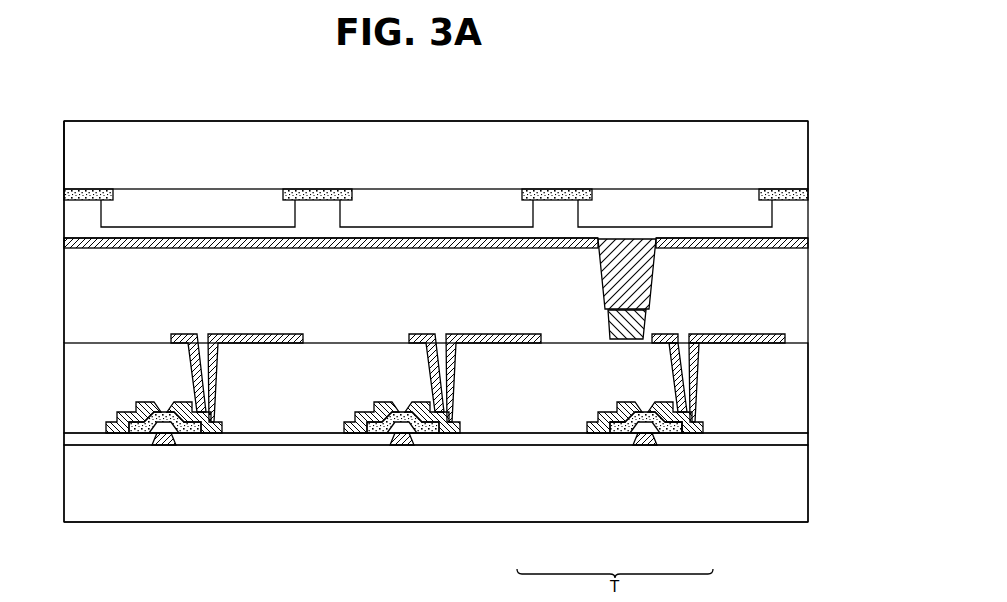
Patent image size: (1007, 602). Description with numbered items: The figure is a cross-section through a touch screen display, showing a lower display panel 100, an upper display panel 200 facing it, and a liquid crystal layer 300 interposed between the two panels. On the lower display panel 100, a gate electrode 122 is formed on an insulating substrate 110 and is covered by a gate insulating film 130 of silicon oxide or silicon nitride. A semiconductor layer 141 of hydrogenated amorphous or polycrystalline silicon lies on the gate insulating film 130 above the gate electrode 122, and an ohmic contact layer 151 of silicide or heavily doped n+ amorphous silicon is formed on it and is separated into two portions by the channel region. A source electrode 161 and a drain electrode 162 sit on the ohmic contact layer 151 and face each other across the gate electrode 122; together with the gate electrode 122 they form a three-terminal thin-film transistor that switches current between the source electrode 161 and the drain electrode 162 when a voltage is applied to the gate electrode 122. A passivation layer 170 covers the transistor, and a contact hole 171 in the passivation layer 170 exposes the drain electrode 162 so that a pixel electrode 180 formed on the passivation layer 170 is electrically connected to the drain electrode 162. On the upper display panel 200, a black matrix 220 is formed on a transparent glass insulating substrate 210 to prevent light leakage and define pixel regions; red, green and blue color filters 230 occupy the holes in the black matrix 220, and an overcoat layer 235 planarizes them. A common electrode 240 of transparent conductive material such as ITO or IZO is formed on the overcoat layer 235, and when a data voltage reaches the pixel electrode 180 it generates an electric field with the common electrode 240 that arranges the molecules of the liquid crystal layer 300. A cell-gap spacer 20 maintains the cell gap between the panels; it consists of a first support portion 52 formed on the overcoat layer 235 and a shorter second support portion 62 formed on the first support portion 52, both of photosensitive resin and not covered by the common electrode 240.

The upper display panel 200 is at (108, 108).
The liquid crystal layer 300 is at (74, 294).
The lower display panel 100 is at (129, 540).
The insulating substrate 210 is at (797, 144).
The black matrix 220 is at (800, 192).
The R, G and B color filters 230 is at (771, 208).
The overcoat layer 235 is at (798, 233).
The common electrode 240 is at (800, 245).
The cell-gap spacer 20 is at (597, 289).
The first support portion 52 is at (617, 296).
The second support portion 62 is at (617, 322).
The contact hole 171 is at (683, 328).
The pixel electrode 180 is at (783, 337).
The passivation layer 170 is at (800, 395).
The gate insulating film 130 is at (800, 435).
The insulating substrate 110 is at (800, 508).
The source electrode 161 is at (587, 433).
The semiconductor layer 141 is at (615, 433).
The gate electrode 122 is at (645, 445).
The ohmic contact layer 151 is at (677, 433).
The drain electrode 162 is at (690, 433).